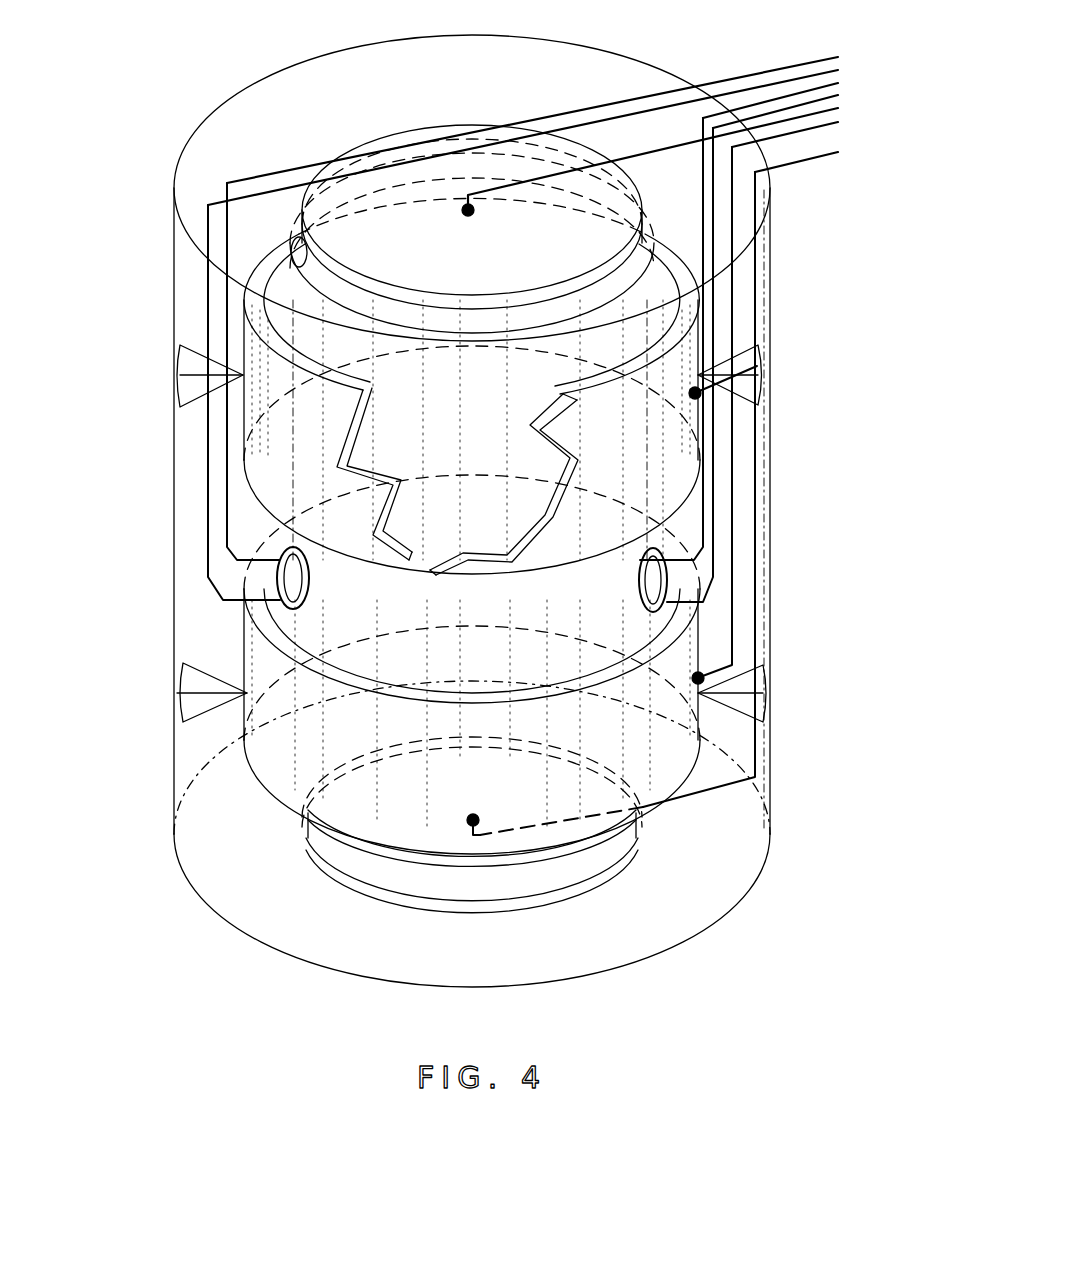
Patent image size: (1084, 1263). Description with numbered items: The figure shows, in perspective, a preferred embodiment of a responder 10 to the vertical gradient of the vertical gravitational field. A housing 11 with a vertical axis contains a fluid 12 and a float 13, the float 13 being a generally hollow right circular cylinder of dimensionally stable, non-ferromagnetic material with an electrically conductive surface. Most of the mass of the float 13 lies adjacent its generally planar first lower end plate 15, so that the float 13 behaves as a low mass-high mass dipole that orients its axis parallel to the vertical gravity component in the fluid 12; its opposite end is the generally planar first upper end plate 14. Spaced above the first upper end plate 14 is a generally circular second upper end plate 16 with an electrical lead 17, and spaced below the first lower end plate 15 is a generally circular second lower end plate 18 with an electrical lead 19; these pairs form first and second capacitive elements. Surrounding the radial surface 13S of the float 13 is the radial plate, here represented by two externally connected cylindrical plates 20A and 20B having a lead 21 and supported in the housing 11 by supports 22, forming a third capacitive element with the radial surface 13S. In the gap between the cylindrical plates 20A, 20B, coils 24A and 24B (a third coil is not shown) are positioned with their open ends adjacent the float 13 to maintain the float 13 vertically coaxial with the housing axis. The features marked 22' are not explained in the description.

The responder 10 is at (175, 902).
The housing 11 is at (173, 293).
The fluid 12 is at (205, 262).
The float 13 is at (635, 303).
The radial surface 13S is at (465, 453).
The first upper end plate 14 is at (300, 240).
The first lower end plate 15 is at (297, 818).
The second upper end plate 16 is at (548, 241).
The electrical lead 17 is at (643, 158).
The second lower end plate 18 is at (405, 905).
The electrical lead 19 is at (718, 805).
The cylindrical plate 20A is at (518, 783).
The cylindrical plate 20B is at (630, 460).
The lead 21 is at (735, 527).
The supports 22 is at (740, 491).
The force arrows 22' is at (465, 533).
The coil 24A is at (312, 578).
The coil 24B is at (637, 578).